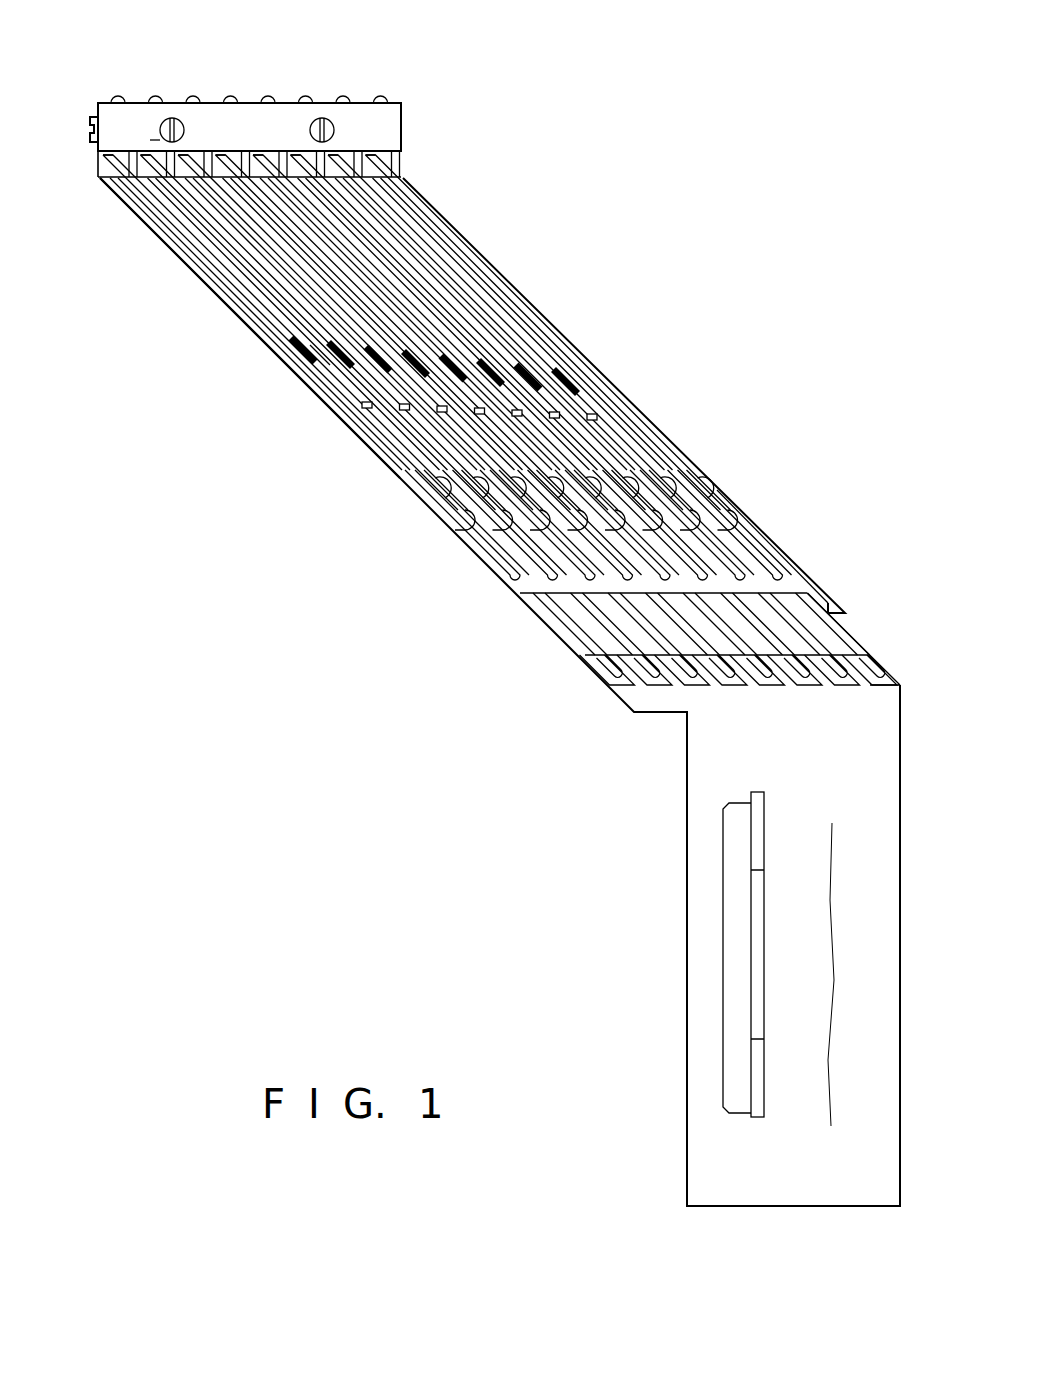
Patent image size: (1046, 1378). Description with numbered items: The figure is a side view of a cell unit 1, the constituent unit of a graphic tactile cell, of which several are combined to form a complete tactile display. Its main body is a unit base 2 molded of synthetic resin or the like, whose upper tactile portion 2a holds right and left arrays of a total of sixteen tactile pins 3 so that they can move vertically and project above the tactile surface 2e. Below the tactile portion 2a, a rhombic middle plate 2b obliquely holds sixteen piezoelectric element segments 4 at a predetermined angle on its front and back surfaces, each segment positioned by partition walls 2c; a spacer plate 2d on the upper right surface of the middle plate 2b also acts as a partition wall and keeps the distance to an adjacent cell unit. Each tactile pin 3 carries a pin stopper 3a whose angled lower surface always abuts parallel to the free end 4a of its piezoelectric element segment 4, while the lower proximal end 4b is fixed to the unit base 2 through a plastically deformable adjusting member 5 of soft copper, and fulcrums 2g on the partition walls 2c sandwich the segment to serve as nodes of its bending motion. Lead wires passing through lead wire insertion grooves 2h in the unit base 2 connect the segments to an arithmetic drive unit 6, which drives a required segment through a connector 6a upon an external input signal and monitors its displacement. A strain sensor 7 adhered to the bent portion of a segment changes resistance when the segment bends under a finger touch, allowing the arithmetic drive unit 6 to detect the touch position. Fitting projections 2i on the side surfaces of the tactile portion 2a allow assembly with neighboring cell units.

The cell unit 1 is at (540, 292).
The unit base 2 is at (383, 132).
The tactile portion 2a is at (120, 137).
The middle plate 2b is at (410, 487).
The partition wall 2c is at (302, 345).
The spacer plate 2d is at (717, 490).
The tactile surface 2e is at (148, 138).
The fulcrum 2g is at (368, 407).
The lead wire insertion groove 2h is at (572, 618).
The fitting projection 2i is at (90, 128).
The tactile pin 3 is at (383, 100).
The pin stopper 3a is at (343, 160).
The piezoelectric element segment 4 is at (122, 188).
The free end 4a is at (148, 173).
The proximal end 4b is at (490, 548).
The adjusting member 5 is at (772, 572).
The arithmetic drive unit 6 is at (712, 776).
The connector 6a is at (735, 1003).
The strain sensor 7 is at (558, 365).